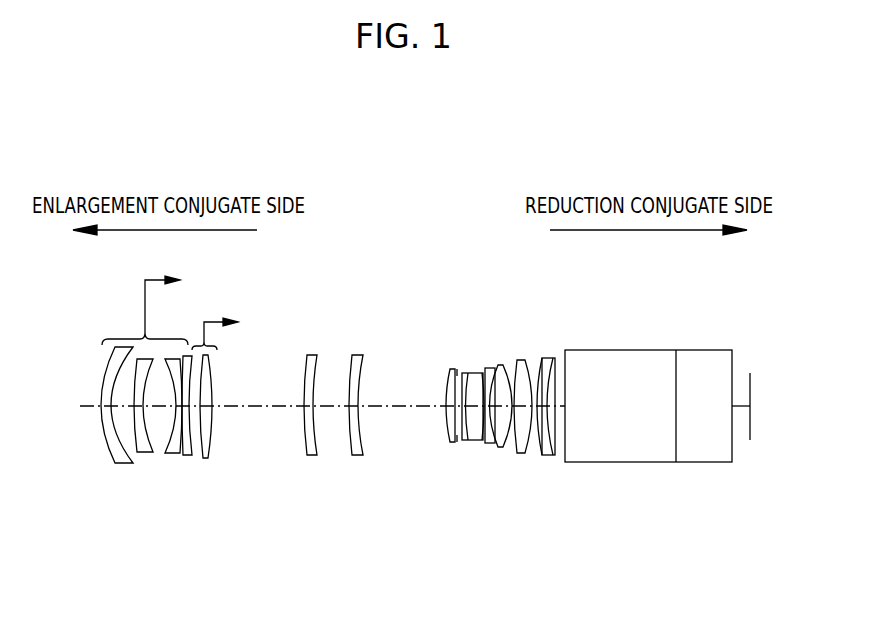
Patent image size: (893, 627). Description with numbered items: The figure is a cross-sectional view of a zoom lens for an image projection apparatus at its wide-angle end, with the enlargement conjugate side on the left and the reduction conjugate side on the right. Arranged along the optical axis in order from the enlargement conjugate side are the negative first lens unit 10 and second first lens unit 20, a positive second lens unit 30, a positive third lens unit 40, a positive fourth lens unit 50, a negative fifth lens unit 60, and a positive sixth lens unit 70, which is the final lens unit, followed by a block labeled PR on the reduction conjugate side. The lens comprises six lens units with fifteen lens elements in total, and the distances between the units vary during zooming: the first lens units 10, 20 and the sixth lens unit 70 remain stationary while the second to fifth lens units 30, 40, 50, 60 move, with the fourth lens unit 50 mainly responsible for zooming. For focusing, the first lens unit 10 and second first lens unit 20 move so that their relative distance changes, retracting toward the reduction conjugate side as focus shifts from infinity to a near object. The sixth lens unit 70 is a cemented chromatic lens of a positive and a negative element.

The first lens unit 10 is at (190, 480).
The second first lens unit 20 is at (201, 457).
The second lens unit 30 is at (313, 455).
The third lens unit 40 is at (358, 455).
The fourth lens unit 50 is at (448, 443).
The fifth lens unit 60 is at (538, 480).
The sixth lens unit 70 is at (547, 455).
The prism PR is at (658, 452).